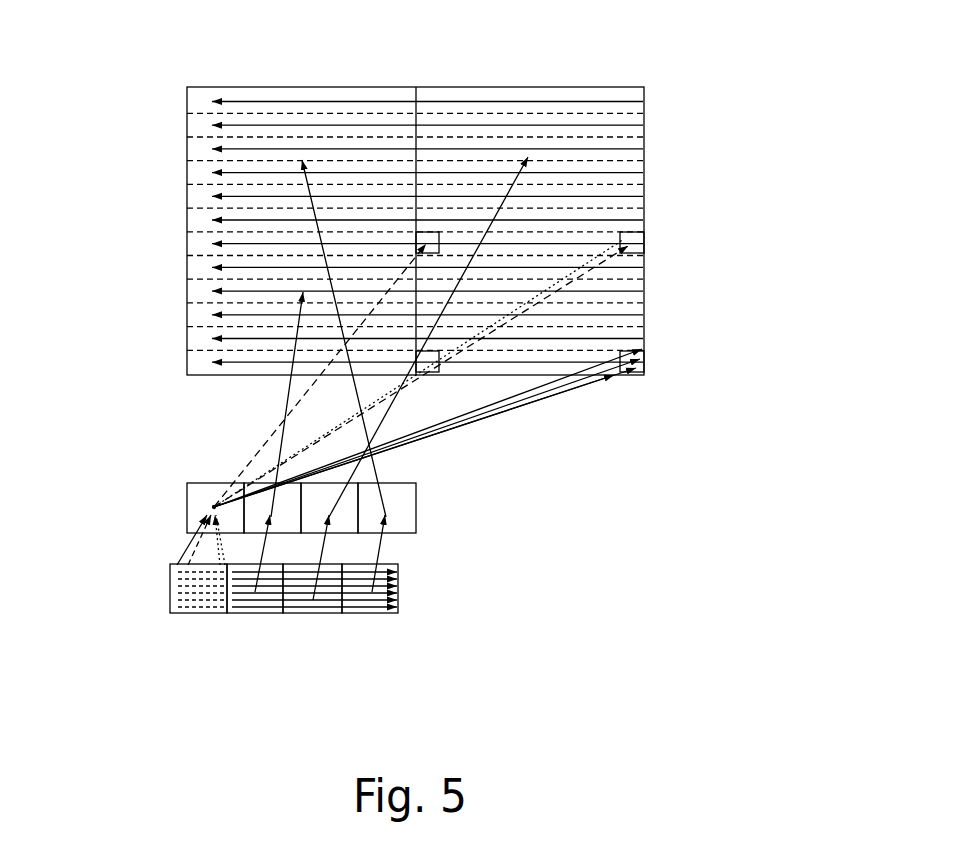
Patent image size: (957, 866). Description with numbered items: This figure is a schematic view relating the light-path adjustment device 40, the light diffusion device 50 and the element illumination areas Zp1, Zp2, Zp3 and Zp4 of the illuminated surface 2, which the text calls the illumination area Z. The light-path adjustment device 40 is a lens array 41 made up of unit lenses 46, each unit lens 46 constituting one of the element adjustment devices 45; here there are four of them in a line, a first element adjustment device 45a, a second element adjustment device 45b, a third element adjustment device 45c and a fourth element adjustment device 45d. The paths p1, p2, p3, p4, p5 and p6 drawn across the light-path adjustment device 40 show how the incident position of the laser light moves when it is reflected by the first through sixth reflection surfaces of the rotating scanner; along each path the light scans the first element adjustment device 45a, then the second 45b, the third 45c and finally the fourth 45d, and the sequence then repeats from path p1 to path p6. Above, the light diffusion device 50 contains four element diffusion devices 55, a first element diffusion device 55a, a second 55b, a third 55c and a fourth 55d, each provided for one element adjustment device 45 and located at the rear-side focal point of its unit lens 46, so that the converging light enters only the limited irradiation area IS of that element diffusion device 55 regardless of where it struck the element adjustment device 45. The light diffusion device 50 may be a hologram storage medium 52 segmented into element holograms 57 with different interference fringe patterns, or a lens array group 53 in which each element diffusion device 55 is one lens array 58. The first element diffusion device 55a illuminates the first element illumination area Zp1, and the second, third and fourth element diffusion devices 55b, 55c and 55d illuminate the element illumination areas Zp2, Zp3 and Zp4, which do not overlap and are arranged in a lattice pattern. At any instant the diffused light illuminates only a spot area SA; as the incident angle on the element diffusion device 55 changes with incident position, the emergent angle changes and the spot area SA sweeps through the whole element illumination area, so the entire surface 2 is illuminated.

The screen / projection surface 2 is at (478, 86).
The light-path adjustment device 40 is at (330, 650).
The lens array 41 is at (165, 617).
The element adjustment devices 45 is at (341, 650).
The first element adjustment device 45a is at (197, 614).
The second element adjustment device 45b is at (257, 612).
The third element adjustment device 45c is at (337, 613).
The fourth element adjustment device 45d is at (399, 585).
The unit lens 46 is at (341, 650).
The light diffusion device 50 is at (343, 469).
The hologram storage medium 52 is at (343, 469).
The lens array group 53 is at (432, 478).
The element diffusion device 55 is at (343, 469).
The first element diffusion device 55a is at (200, 483).
The second element diffusion device 55b is at (253, 482).
The third element diffusion device 55c is at (340, 523).
The fourth element diffusion device 55d is at (400, 500).
The element hologram 57 is at (343, 469).
The lens array 58 is at (343, 469).
The limited irradiation area IS is at (213, 507).
The spot area SA is at (416, 237).
The path p1 is at (370, 578).
The path p2 is at (356, 580).
The path p3 is at (341, 587).
The path p4 is at (322, 594).
The path p5 is at (297, 601).
The path p6 is at (245, 607).
The first element illumination area Zp1 is at (700, 230).
The second element illumination area Zp2 is at (129, 233).
The third element illumination area Zp3 is at (700, 86).
The fourth element illumination area Zp4 is at (129, 91).